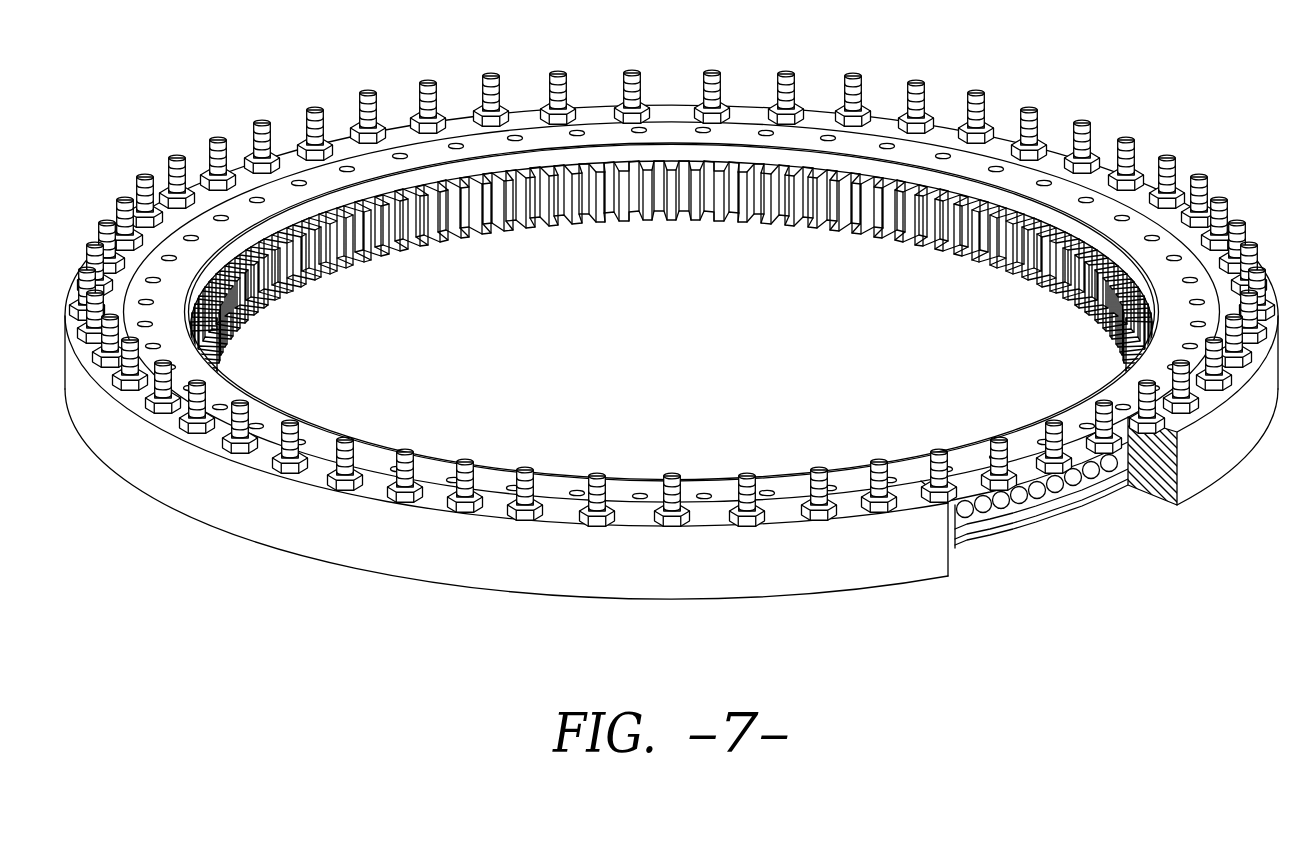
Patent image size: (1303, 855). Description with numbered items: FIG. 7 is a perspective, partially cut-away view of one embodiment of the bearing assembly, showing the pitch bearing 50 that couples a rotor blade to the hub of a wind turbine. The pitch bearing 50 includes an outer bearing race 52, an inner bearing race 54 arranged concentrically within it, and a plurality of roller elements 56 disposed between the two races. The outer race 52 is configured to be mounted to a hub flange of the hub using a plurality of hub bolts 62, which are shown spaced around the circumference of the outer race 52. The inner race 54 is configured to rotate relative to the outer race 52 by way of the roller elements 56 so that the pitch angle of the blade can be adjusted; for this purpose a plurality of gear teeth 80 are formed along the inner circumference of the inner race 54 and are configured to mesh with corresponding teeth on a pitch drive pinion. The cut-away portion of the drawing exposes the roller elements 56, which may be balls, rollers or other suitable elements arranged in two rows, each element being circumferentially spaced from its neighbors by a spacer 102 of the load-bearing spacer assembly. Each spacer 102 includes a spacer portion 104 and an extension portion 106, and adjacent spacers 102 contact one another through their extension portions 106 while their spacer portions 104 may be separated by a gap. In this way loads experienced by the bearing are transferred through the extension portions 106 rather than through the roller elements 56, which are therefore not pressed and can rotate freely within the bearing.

The pitch bearing 50 is at (672, 326).
The outer bearing race 52 is at (1222, 438).
The inner bearing race 54 is at (1167, 263).
The roller elements 56 is at (1083, 483).
The hub bolts 62 is at (173, 157).
The gear teeth 80 is at (395, 252).
The spacers 102 is at (1043, 522).
The spacer portion 104 is at (1002, 533).
The extension portion 106 is at (1123, 493).